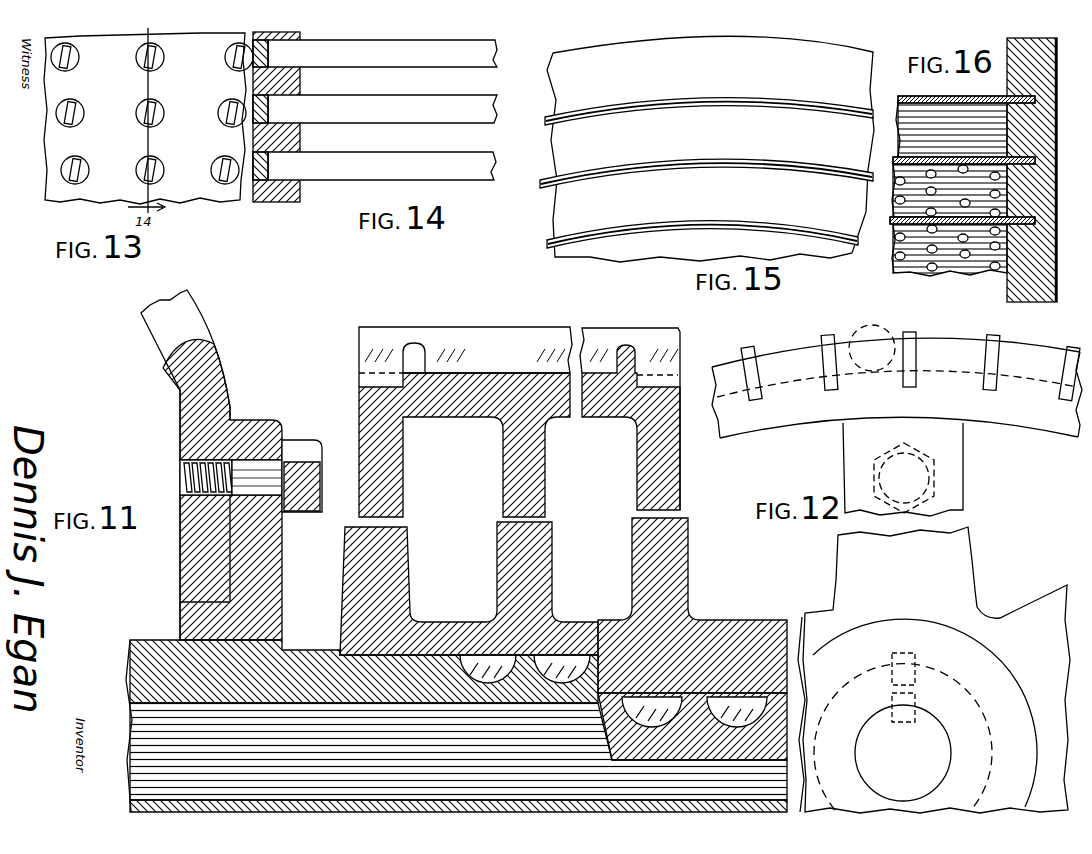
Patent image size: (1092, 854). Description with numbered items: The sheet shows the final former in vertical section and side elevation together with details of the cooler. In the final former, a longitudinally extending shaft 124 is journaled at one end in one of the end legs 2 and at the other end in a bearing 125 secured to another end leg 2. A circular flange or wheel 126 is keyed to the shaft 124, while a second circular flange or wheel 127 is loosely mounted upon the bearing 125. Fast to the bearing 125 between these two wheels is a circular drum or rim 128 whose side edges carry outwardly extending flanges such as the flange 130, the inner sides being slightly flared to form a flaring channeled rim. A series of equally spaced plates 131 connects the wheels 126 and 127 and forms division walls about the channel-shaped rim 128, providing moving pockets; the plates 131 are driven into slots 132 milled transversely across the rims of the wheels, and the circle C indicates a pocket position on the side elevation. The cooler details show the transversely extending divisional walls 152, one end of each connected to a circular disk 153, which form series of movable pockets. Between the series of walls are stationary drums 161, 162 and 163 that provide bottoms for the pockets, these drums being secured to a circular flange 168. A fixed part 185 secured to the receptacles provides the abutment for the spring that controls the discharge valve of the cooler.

In FIG. 11, the end leg 2 is at (208, 362).
In FIG. 12, the longitudinally extending shaft 124 is at (936, 670).
In FIG. 11, the longitudinally extending shaft 124 is at (153, 726).
In FIG. 11, the bearing 125 is at (313, 663).
In FIG. 11, the circular flange or wheel 126 is at (682, 420).
In FIG. 11, the second circular flange or wheel 127 is at (359, 405).
In FIG. 11, the circular drum or rim 128 is at (483, 405).
In FIG. 11, the outwardly-extending flange 130 is at (626, 345).
In FIG. 12, the plates 131 is at (909, 341).
In FIG. 11, the plates 131 is at (502, 345).
In FIG. 12, the slots 132 is at (758, 395).
In FIG. 12, the circle C is at (880, 333).
In FIG. 13, the divisional walls 152 is at (72, 173).
In FIG. 14, the divisional walls 152 is at (482, 110).
In FIG. 13, the circular disk 153 is at (108, 194).
In FIG. 14, the circular disk 153 is at (300, 139).
In FIG. 15, the drum 161 is at (865, 102).
In FIG. 15, the drum 162 is at (865, 167).
In FIG. 15, the drum 163 is at (857, 228).
In FIG. 15, the circular flange 168 is at (848, 65).
In FIG. 16, the circular flange 168 is at (1043, 272).
In FIG. 16, the fixed part 185 is at (992, 217).